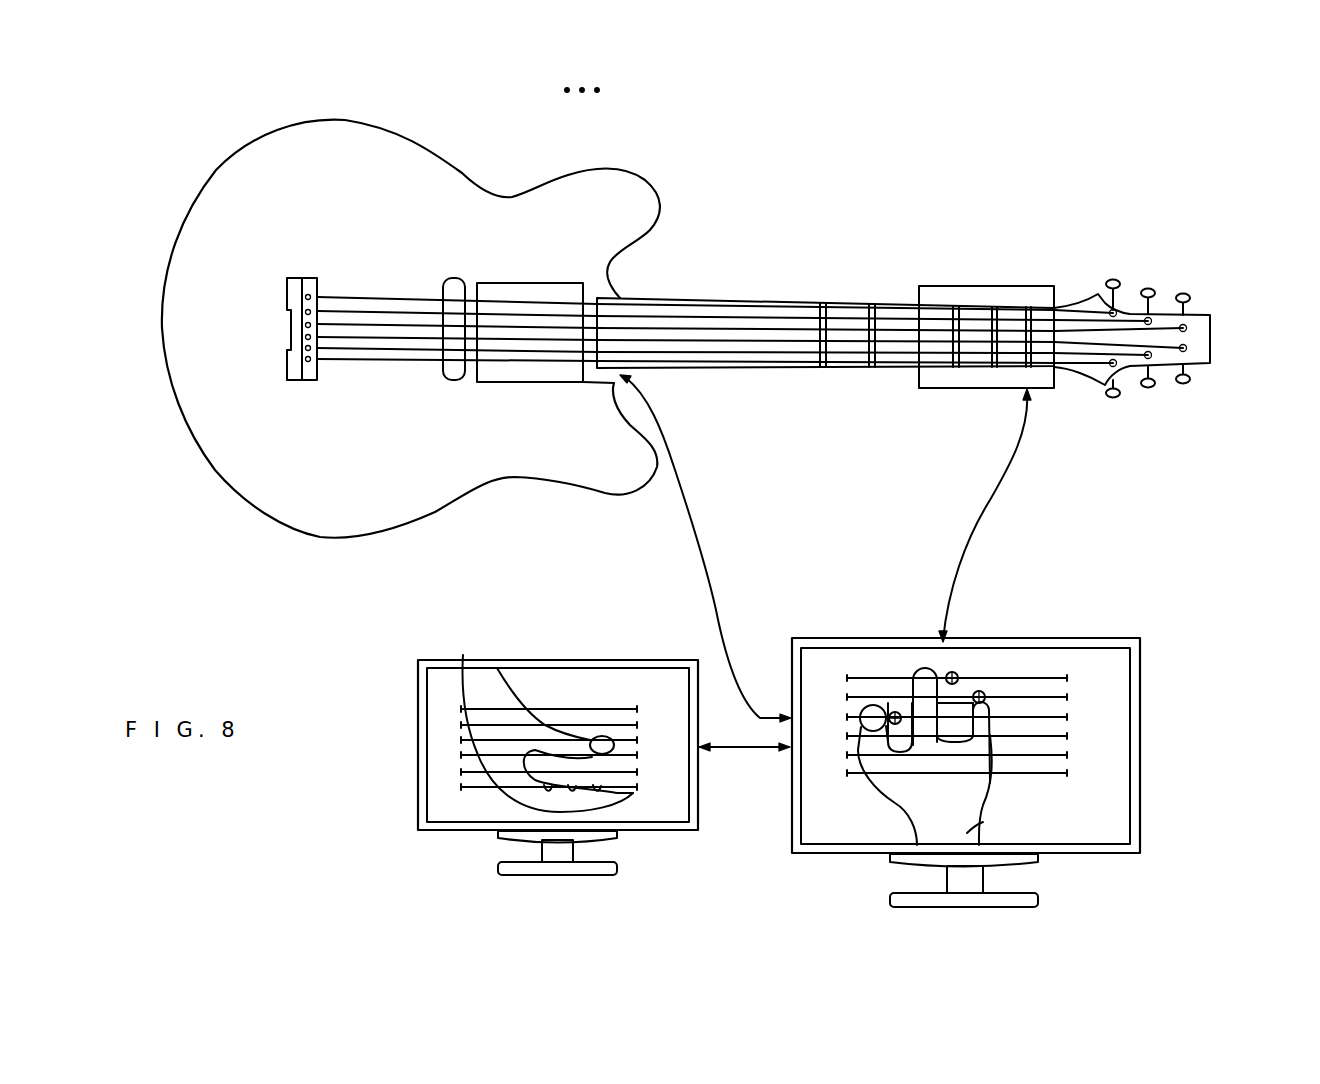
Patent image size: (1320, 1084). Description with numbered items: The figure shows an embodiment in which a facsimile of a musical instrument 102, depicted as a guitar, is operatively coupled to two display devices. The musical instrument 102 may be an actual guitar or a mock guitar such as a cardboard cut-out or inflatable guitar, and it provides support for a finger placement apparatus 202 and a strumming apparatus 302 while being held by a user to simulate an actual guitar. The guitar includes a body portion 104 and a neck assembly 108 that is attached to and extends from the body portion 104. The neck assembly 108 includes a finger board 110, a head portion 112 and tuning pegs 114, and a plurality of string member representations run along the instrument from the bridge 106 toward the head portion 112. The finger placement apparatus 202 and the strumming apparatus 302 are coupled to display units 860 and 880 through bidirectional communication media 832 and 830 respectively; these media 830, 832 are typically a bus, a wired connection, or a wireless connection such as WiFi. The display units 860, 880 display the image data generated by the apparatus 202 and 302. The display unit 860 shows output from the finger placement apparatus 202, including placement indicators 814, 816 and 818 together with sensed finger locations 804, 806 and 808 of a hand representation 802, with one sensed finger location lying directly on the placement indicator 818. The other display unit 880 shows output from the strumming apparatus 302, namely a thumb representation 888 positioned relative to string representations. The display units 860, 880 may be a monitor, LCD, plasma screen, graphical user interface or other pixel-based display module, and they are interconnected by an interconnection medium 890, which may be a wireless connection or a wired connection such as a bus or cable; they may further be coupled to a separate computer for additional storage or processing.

The musical instrument 102 is at (849, 119).
The body portion 104 is at (509, 488).
The bridge 106 is at (283, 364).
The neck assembly 108 is at (868, 284).
The finger board 110 is at (695, 346).
The head portion 112 is at (1202, 338).
The tuning pegs 114 is at (1107, 280).
The finger placement apparatus 202 is at (1000, 287).
The strumming apparatus 302 is at (569, 383).
The hand representation 802 is at (997, 803).
The sensed finger location 804 is at (857, 698).
The sensed finger location 806 is at (925, 668).
The finger 808 is at (978, 712).
The placement indicator 814 is at (893, 711).
The placement indicator 816 is at (955, 674).
The placement indicator 818 is at (985, 699).
The bidirectional communication medium 830 is at (705, 560).
The bidirectional communication medium 832 is at (1010, 468).
The display unit 860 is at (1153, 729).
The display unit 880 is at (407, 777).
The thumb representation 888 is at (522, 700).
The interconnection medium 890 is at (733, 748).